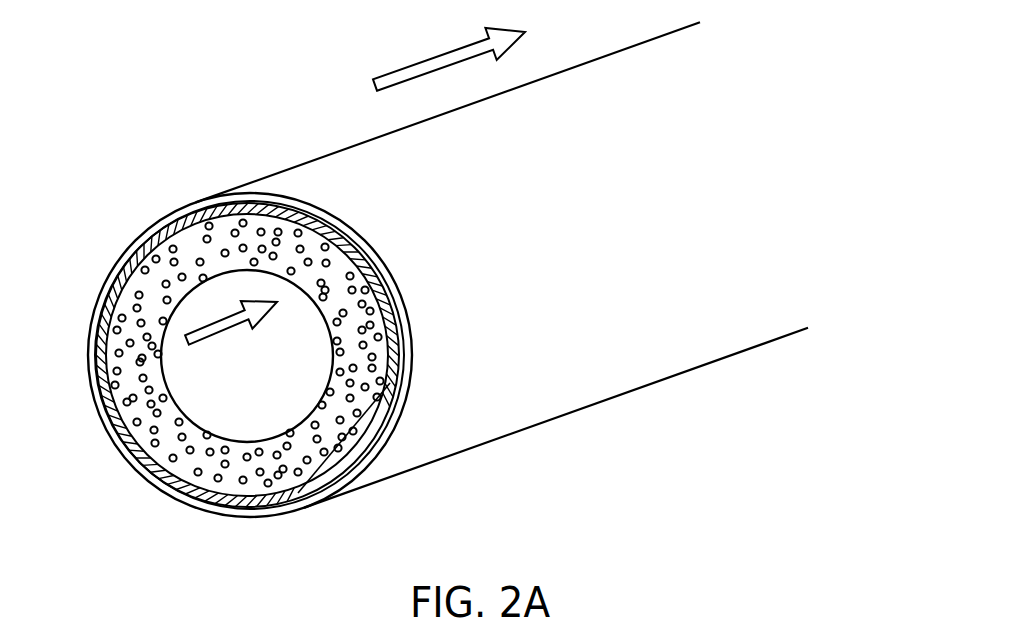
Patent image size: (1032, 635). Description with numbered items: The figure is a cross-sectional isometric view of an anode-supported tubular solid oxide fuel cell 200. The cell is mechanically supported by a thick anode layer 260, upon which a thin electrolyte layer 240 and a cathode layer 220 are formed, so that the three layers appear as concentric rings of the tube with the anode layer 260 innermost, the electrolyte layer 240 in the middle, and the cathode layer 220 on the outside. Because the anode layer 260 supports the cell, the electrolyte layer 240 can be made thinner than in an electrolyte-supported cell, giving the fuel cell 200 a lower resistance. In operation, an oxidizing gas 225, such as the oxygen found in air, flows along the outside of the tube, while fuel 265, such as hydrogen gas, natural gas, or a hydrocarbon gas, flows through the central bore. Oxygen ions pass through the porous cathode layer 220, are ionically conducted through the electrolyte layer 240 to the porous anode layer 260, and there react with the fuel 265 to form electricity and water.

The tubular solid oxide fuel cell 200 is at (587, 435).
The cathode layer 220 is at (233, 513).
The electrolyte layer 240 is at (292, 492).
The anode layer 260 is at (372, 352).
The oxidizing gas 225 is at (315, 141).
The fuel 265 is at (263, 414).